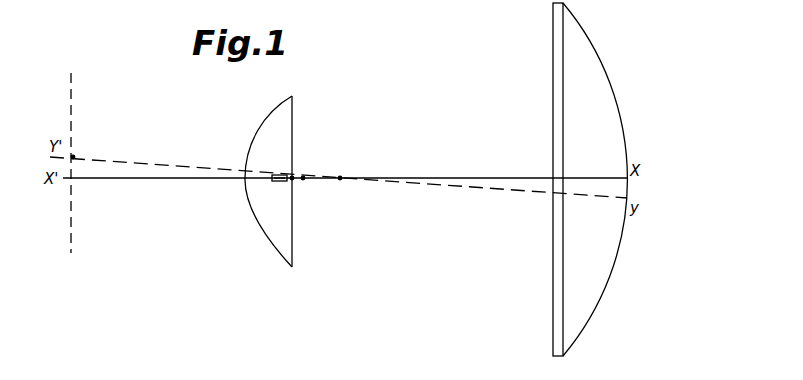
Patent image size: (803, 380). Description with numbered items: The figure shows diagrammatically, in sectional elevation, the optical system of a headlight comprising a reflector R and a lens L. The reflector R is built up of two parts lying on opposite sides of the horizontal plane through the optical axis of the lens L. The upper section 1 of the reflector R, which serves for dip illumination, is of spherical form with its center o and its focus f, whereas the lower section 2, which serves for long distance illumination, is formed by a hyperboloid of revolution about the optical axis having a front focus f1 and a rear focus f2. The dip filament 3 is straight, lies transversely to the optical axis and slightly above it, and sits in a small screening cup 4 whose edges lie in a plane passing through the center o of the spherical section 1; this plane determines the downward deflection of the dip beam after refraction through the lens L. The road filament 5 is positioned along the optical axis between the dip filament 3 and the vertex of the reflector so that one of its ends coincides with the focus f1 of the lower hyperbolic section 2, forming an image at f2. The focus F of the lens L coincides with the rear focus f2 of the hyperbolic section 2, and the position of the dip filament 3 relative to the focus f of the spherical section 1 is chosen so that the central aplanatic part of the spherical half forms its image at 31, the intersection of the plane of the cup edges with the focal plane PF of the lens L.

The upper section of the reflector 1 is at (271, 113).
The lower section of the reflector 2 is at (262, 233).
The dip filament 3 is at (291, 176).
The image of the dip filament 31 is at (74, 157).
The screening cup 4 is at (294, 180).
The road filament 5 is at (273, 181).
The reflector R is at (293, 147).
The lens L is at (603, 72).
The focus of the lens F is at (71, 180).
The focus of the spherical section f is at (304, 180).
The front focus of the hyperbolic section f1 is at (283, 182).
The rear focus of the hyperbolic section f2 is at (71, 180).
The center of the spherical section o is at (339, 169).
The focal plane of the lens PF is at (73, 100).